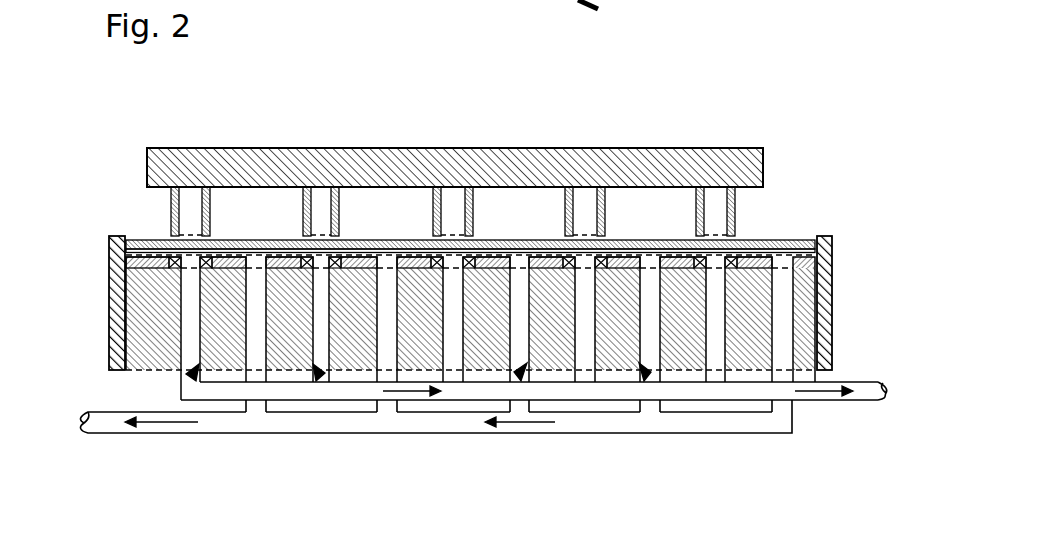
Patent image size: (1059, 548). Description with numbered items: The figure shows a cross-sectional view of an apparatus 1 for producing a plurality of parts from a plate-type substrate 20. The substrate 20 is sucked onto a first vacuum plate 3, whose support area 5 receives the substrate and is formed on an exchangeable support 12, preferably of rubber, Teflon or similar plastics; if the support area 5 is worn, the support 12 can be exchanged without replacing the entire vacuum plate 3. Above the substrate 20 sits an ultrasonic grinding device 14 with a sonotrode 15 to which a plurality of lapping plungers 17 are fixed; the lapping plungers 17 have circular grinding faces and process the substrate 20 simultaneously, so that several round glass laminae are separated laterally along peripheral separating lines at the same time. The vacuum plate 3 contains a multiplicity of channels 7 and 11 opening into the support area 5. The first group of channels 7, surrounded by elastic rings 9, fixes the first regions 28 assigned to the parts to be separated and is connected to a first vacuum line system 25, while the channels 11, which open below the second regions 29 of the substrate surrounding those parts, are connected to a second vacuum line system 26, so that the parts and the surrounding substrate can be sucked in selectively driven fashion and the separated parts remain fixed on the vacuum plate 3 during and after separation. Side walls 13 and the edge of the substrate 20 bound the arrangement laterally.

The cooling device 1 is at (662, 95).
The vacuum plate 3 is at (148, 320).
The support area 5 is at (131, 243).
The channels 7 is at (314, 380).
The elastic rings 9 is at (738, 256).
The channels 11 is at (644, 380).
The exchangeable support 12 is at (762, 270).
The left side wall 13 is at (115, 238).
The heat transfer plate assembly 14 is at (779, 130).
The sonotrode 15 is at (287, 148).
The lapping plungers 17 is at (476, 207).
The plate-type substrate 20 is at (789, 238).
The first vacuum line system 25 is at (838, 402).
The second vacuum line system 26 is at (371, 434).
The first regions 28 is at (313, 250).
The second regions 29 is at (213, 248).